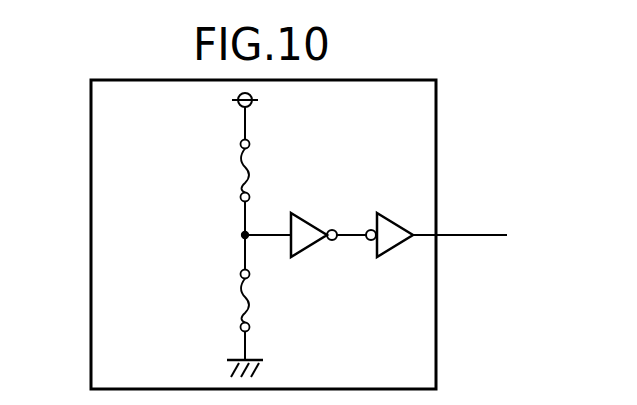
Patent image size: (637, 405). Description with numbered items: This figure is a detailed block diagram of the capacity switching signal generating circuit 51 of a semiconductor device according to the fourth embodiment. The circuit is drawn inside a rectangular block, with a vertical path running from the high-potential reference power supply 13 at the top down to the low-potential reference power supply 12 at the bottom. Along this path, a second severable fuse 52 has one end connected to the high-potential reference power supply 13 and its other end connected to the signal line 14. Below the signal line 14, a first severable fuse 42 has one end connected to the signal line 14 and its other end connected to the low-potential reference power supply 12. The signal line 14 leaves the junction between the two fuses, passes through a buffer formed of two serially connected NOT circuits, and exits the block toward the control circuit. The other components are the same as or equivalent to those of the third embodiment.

The capacity switching signal generating circuit 51 is at (90, 113).
The high-potential reference power supply 13 is at (266, 104).
The second severable fuse 52 is at (259, 173).
The signal line 14 is at (266, 238).
The first severable fuse 42 is at (259, 304).
The low-potential reference power supply 12 is at (223, 357).